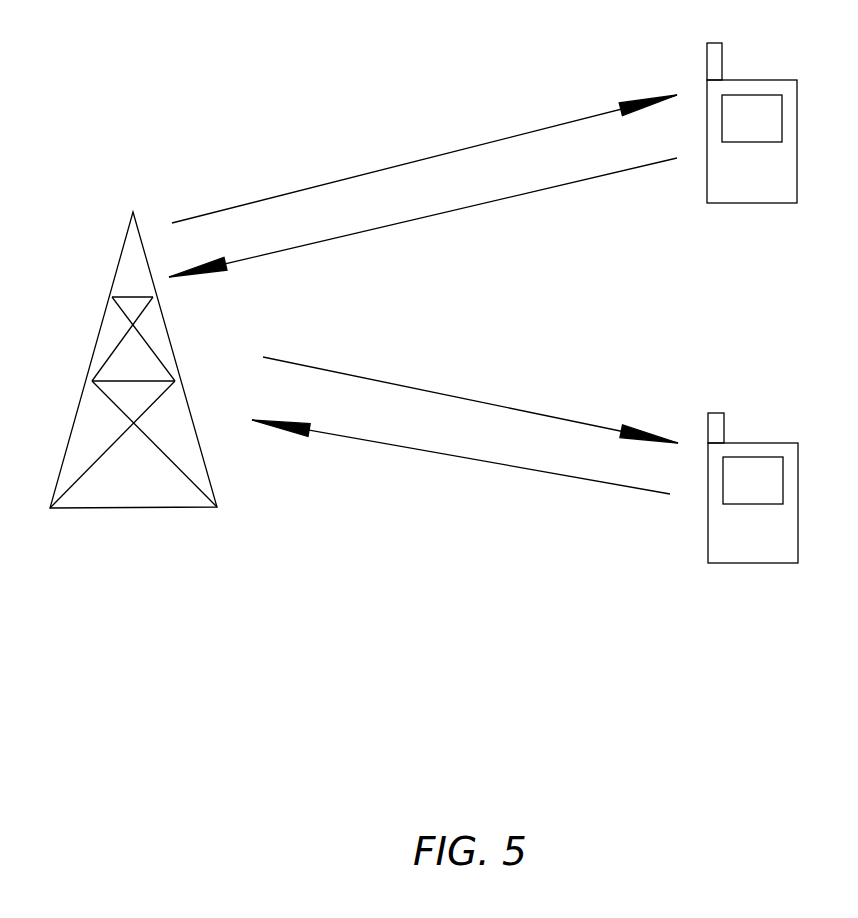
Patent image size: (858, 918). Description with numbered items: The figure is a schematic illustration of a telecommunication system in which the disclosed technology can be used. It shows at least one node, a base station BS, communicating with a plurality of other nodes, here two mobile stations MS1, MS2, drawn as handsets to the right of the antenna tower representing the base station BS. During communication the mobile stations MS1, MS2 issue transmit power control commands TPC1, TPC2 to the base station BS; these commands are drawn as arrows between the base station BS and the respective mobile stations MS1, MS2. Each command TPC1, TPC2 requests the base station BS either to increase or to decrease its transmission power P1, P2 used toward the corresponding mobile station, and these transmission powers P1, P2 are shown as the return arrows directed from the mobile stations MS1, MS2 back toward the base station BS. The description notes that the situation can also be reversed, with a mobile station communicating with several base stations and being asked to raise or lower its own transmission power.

The base station BS is at (133, 360).
The mobile station MS1 is at (752, 123).
The mobile station MS2 is at (753, 488).
The transmit power control command TPC1 is at (424, 159).
The transmission power P1 is at (423, 226).
The transmit power control command TPC2 is at (470, 398).
The transmission power P2 is at (461, 457).